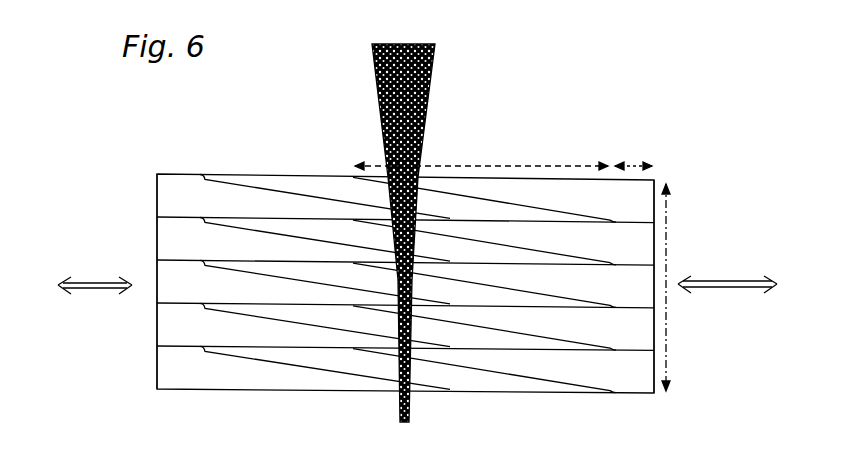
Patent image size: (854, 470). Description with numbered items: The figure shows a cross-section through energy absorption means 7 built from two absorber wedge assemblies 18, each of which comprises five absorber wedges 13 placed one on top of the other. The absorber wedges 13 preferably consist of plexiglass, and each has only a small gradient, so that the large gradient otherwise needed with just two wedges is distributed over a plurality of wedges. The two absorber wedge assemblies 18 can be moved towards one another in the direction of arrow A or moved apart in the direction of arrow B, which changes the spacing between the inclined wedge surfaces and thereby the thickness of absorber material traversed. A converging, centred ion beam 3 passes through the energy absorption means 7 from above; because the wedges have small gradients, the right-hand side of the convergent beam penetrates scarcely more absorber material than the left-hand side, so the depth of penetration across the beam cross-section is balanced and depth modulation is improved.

The ion beam 3 is at (428, 83).
The energy absorption means 7 is at (537, 107).
The absorber wedges 13 is at (302, 377).
The absorber wedge assemblies 18 is at (160, 240).
The arrow A is at (376, 269).
The arrow B is at (417, 268).